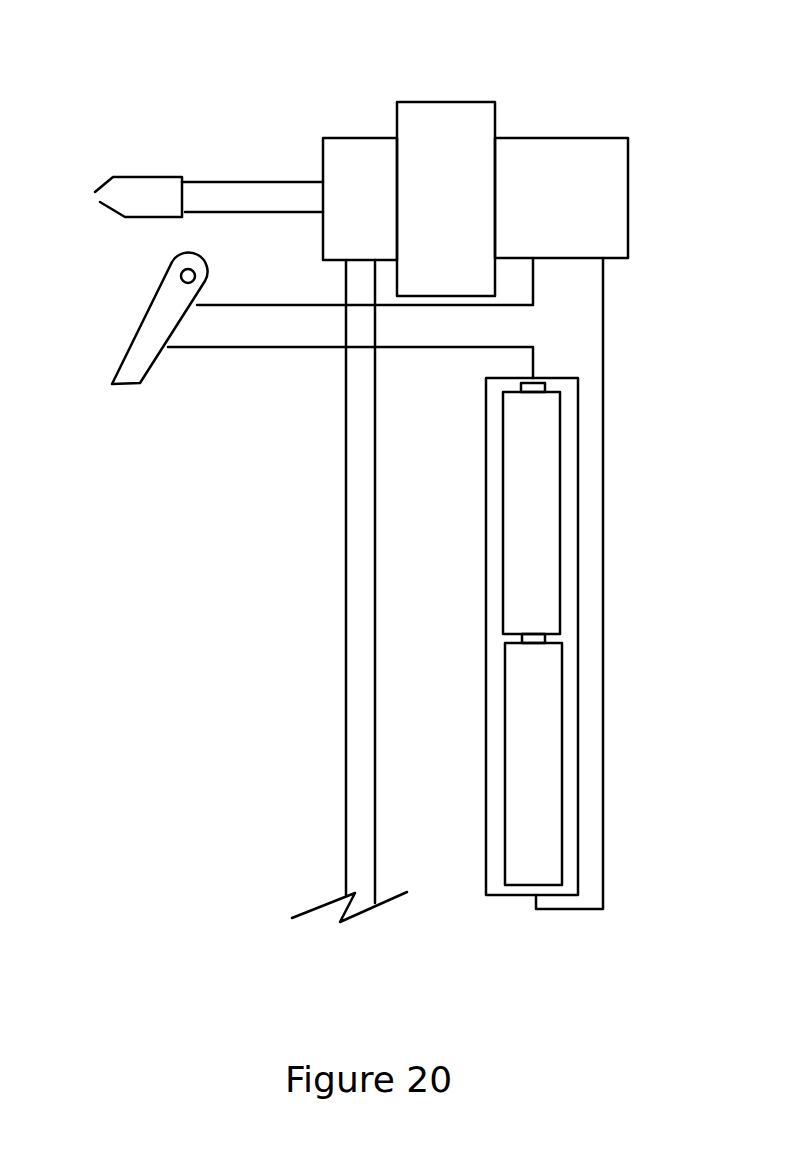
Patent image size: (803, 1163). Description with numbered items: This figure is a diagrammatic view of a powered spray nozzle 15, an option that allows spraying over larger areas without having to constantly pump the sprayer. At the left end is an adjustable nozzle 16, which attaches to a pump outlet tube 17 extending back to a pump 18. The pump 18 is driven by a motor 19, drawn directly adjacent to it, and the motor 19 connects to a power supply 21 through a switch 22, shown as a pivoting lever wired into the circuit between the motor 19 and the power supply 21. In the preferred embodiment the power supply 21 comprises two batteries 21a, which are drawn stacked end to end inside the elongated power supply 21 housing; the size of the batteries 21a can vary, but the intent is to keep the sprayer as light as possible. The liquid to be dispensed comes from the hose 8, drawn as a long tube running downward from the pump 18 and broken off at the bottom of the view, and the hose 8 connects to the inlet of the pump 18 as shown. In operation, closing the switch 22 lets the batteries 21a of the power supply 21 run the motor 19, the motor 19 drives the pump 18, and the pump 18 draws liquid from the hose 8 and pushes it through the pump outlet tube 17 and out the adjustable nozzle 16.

The hose 8 is at (349, 732).
The powered spray nozzle 15 is at (192, 641).
The adjustable nozzle 16 is at (150, 178).
The pump outlet tube 17 is at (243, 187).
The pump 18 is at (355, 142).
The motor 19 is at (451, 110).
The power supply 21 is at (560, 636).
The batteries 21a is at (544, 726).
The switch 22 is at (140, 353).